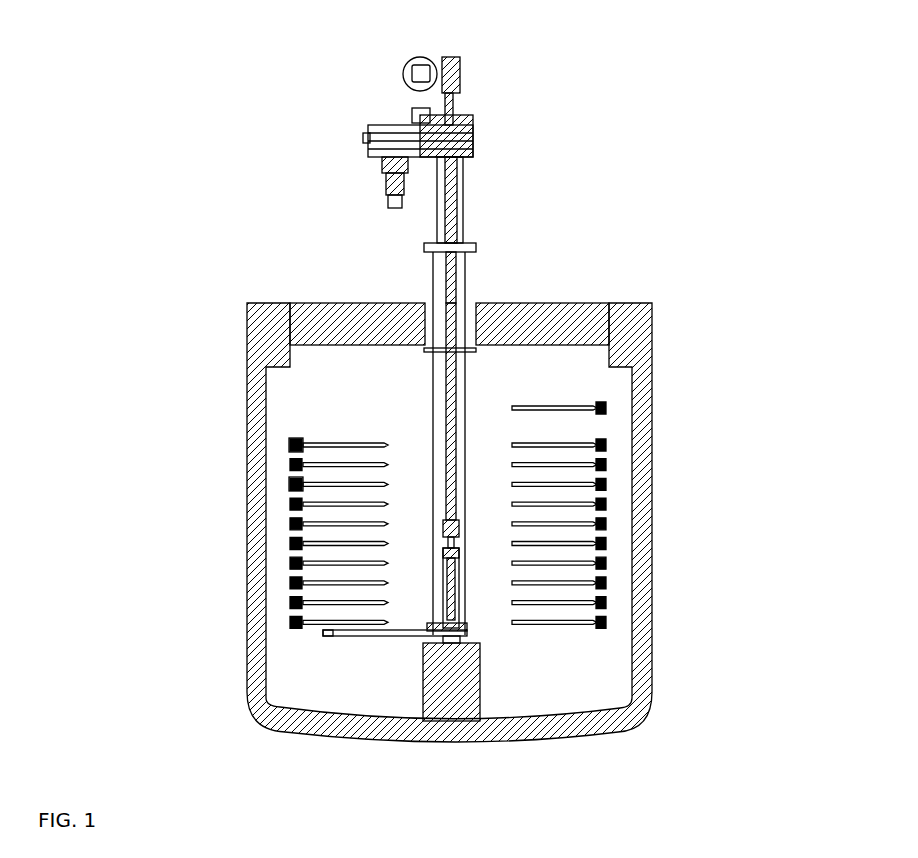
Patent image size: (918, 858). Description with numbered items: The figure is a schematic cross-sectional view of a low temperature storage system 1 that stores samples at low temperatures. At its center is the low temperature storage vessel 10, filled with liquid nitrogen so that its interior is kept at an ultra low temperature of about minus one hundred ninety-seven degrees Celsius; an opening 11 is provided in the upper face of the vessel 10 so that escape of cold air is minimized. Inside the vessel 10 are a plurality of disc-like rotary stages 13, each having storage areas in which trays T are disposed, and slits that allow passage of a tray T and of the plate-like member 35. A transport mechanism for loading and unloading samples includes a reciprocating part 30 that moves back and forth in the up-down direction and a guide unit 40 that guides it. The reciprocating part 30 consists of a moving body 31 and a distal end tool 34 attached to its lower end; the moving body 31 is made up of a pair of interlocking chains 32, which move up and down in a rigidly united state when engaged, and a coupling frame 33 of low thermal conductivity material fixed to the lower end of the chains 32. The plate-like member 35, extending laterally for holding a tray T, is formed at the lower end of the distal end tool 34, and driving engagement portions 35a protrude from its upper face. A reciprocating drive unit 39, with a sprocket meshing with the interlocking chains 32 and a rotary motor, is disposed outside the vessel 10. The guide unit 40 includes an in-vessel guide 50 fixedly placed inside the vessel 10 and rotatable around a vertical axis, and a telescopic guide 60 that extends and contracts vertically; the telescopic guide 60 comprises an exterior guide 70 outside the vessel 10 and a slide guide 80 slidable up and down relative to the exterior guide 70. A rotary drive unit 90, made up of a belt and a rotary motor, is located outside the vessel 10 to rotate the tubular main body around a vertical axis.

The low temperature storage system 1 is at (206, 94).
The low temperature storage vessel 10 is at (645, 692).
The opening 11 is at (490, 302).
The rotary stage 13 is at (320, 582).
The tray T is at (298, 493).
The reciprocating part 30 is at (764, 420).
The moving body 31 is at (719, 395).
The interlocking chains 32 is at (462, 388).
The coupling frame 33 is at (448, 512).
The distal end tool 34 is at (460, 598).
The plate-like member 35 is at (418, 640).
The driving engagement portions 35a is at (327, 640).
The reciprocating drive unit 39 is at (458, 69).
The guide unit 40 is at (119, 225).
The in-vessel guide 50 is at (433, 377).
The telescopic guide 60 is at (163, 195).
The exterior guide 70 is at (437, 230).
The slide guide 80 is at (433, 277).
The rotary drive unit 90 is at (378, 116).